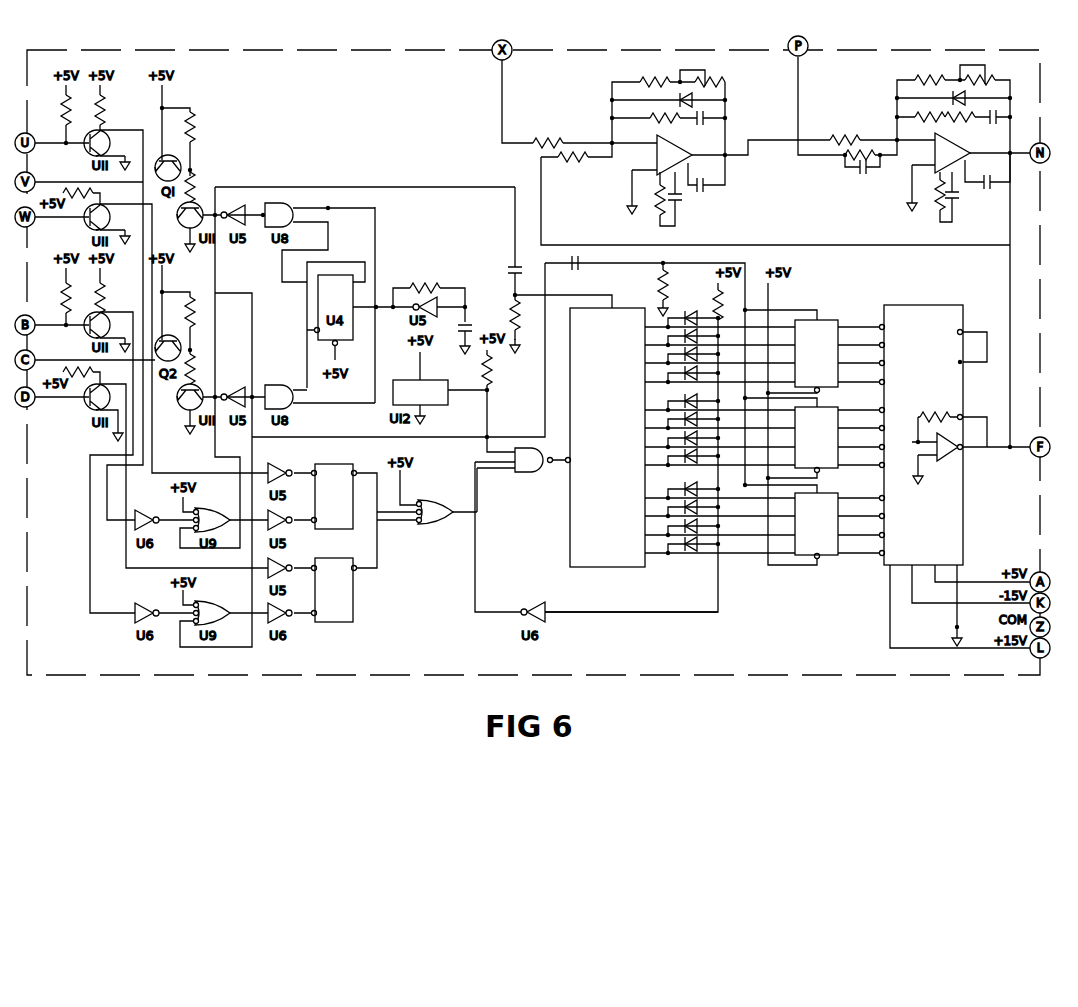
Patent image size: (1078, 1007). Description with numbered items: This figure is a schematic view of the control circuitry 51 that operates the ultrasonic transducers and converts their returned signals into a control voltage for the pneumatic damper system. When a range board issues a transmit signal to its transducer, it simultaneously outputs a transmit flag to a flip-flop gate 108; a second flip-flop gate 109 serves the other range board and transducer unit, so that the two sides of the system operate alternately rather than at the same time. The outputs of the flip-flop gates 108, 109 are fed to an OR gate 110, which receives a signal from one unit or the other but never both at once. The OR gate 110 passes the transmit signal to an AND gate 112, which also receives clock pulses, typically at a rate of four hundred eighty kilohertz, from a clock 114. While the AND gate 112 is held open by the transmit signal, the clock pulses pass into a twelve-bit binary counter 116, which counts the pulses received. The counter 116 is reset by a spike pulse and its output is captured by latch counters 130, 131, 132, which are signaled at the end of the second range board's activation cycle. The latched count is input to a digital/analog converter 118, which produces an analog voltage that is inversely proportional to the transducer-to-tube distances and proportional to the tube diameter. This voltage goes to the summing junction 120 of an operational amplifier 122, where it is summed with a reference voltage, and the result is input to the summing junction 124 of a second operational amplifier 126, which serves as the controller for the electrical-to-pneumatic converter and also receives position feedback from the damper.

The control circuitry 51 is at (350, 50).
The flip-flop gate 108 is at (348, 528).
The flip-flop gate 109 is at (348, 622).
The OR gate 110 is at (435, 525).
The AND gate 112 is at (538, 473).
The clock 114 is at (447, 405).
The 12-bit binary counter 116 is at (570, 557).
The digital/analog converter 118 is at (884, 563).
The summing junction 120 is at (610, 141).
The operational amplifier 122 is at (677, 149).
The summing junction 124 is at (896, 139).
The operational amplifier 126 is at (962, 144).
The latch counter 130 is at (838, 320).
The latch counter 131 is at (838, 413).
The latch counter 132 is at (838, 497).